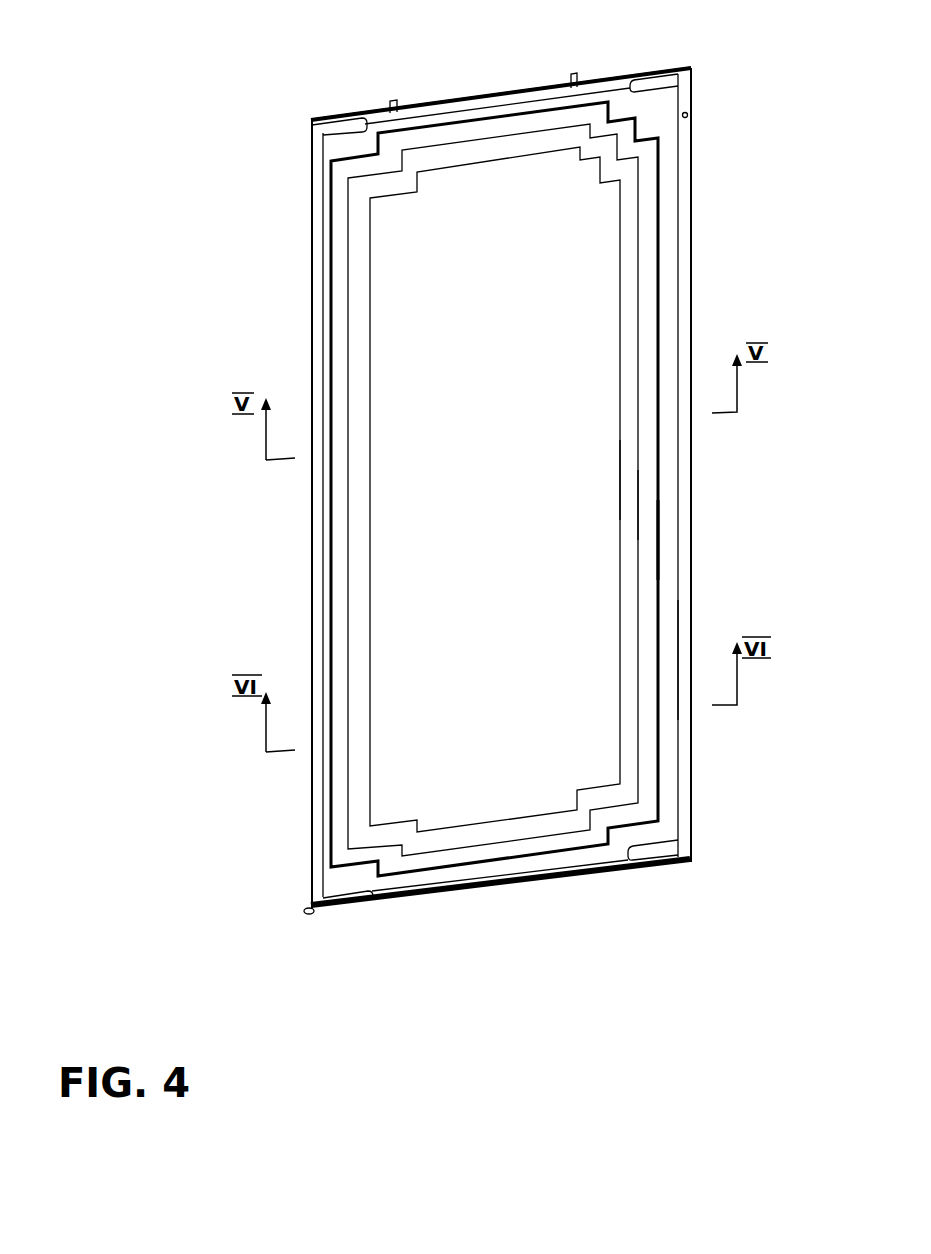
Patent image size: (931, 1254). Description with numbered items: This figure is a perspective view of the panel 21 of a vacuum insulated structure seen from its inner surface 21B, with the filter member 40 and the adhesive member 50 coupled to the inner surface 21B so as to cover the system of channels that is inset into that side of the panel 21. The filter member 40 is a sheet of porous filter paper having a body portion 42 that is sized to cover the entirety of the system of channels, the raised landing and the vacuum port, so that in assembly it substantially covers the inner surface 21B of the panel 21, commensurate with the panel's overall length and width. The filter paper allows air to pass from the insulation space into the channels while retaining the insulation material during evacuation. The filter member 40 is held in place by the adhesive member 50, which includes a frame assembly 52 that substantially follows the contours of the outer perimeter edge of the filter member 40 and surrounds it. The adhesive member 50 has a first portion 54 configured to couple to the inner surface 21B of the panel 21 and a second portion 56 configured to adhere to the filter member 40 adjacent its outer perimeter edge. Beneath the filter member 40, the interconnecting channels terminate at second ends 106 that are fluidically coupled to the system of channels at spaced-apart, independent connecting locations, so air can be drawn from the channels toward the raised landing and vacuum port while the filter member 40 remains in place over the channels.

The panel 21 is at (357, 97).
The inner surface 21B is at (463, 117).
The filter member 40 is at (573, 320).
The body portion 42 is at (488, 447).
The adhesive member 50 is at (632, 418).
The frame assembly 52 is at (628, 497).
The first portion 54 is at (638, 513).
The second portion 56 is at (630, 522).
The second end 106 is at (672, 660).